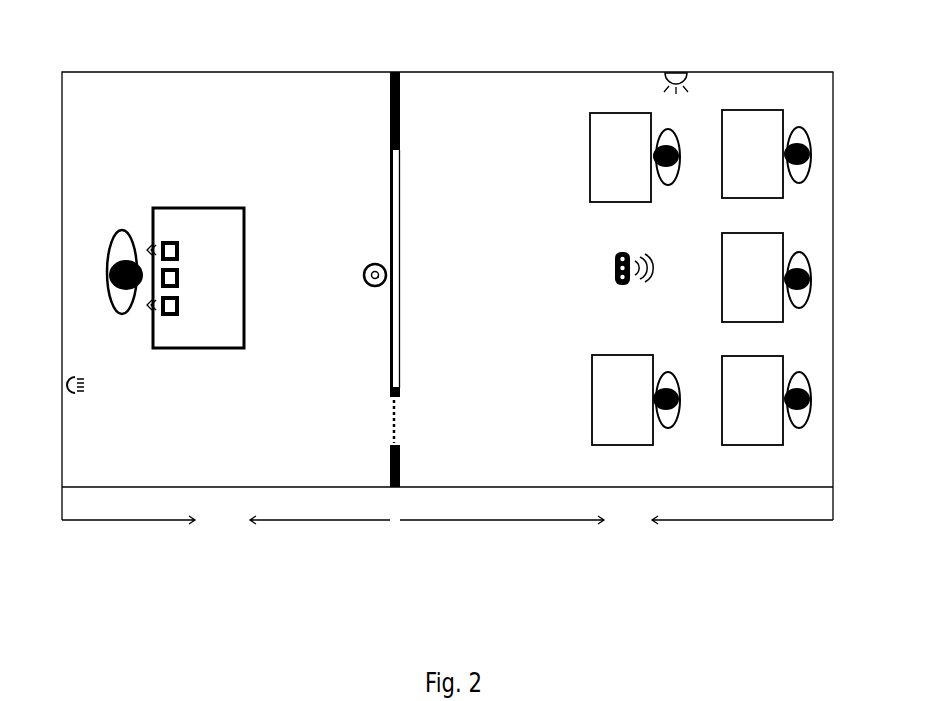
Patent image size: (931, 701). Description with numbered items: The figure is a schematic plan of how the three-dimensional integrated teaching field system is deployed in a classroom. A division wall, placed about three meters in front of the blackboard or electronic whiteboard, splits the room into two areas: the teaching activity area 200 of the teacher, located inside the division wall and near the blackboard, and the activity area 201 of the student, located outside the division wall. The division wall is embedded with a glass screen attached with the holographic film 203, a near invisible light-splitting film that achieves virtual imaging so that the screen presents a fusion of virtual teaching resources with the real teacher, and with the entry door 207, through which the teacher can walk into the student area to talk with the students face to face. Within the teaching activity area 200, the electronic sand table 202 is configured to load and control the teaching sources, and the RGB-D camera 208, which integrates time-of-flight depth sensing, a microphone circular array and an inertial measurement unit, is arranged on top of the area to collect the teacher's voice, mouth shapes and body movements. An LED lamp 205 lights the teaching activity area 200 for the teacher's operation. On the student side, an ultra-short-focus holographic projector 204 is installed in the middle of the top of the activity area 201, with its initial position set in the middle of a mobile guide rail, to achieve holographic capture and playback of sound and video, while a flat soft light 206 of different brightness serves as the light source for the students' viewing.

The teaching activity area 200 is at (226, 520).
The activity area of a student 201 is at (616, 520).
The electronic sand table 202 is at (190, 208).
The holographic film 203 is at (401, 252).
The holographic projector 204 is at (617, 283).
The LED lamp 205 is at (88, 385).
The flat soft light 206 is at (676, 71).
The entry door 207 is at (400, 415).
The red-green-blue-depth (RGB-D) camera 208 is at (373, 264).